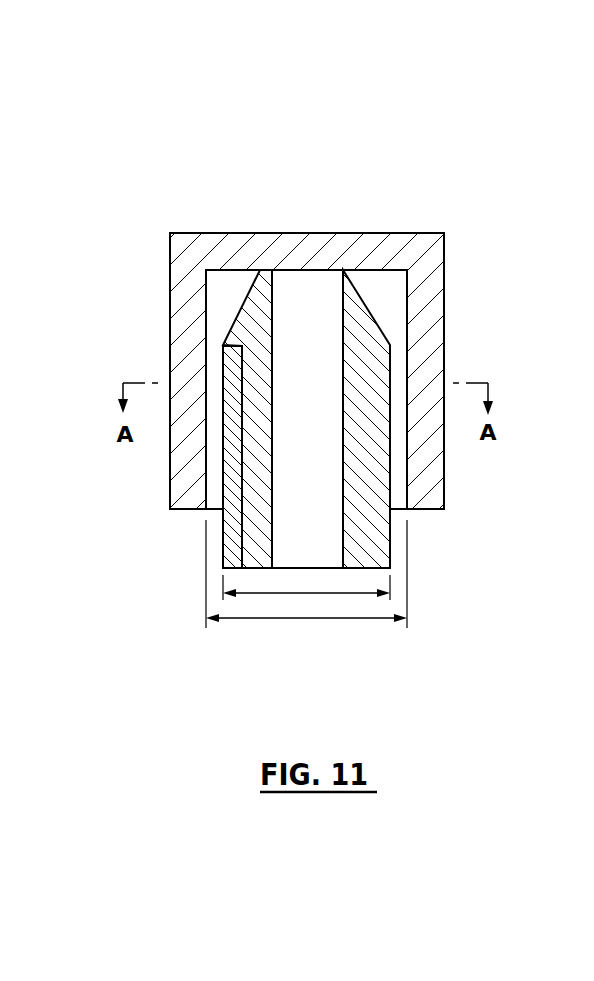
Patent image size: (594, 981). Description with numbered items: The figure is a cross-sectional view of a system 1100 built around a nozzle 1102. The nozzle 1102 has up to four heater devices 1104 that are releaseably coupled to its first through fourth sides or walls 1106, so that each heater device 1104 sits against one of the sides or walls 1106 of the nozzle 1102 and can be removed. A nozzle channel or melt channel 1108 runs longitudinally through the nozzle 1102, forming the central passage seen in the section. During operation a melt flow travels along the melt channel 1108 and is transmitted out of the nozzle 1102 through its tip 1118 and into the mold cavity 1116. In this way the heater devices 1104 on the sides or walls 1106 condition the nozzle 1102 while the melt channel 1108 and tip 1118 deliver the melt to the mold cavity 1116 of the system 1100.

The system 1100 is at (322, 385).
The nozzle 1102 is at (372, 529).
The heater devices 1104 is at (232, 531).
The sides or walls 1106 is at (250, 554).
The nozzle channel or melt channel 1108 is at (318, 557).
The mold cavity 1116 is at (430, 465).
The tip 1118 is at (293, 270).